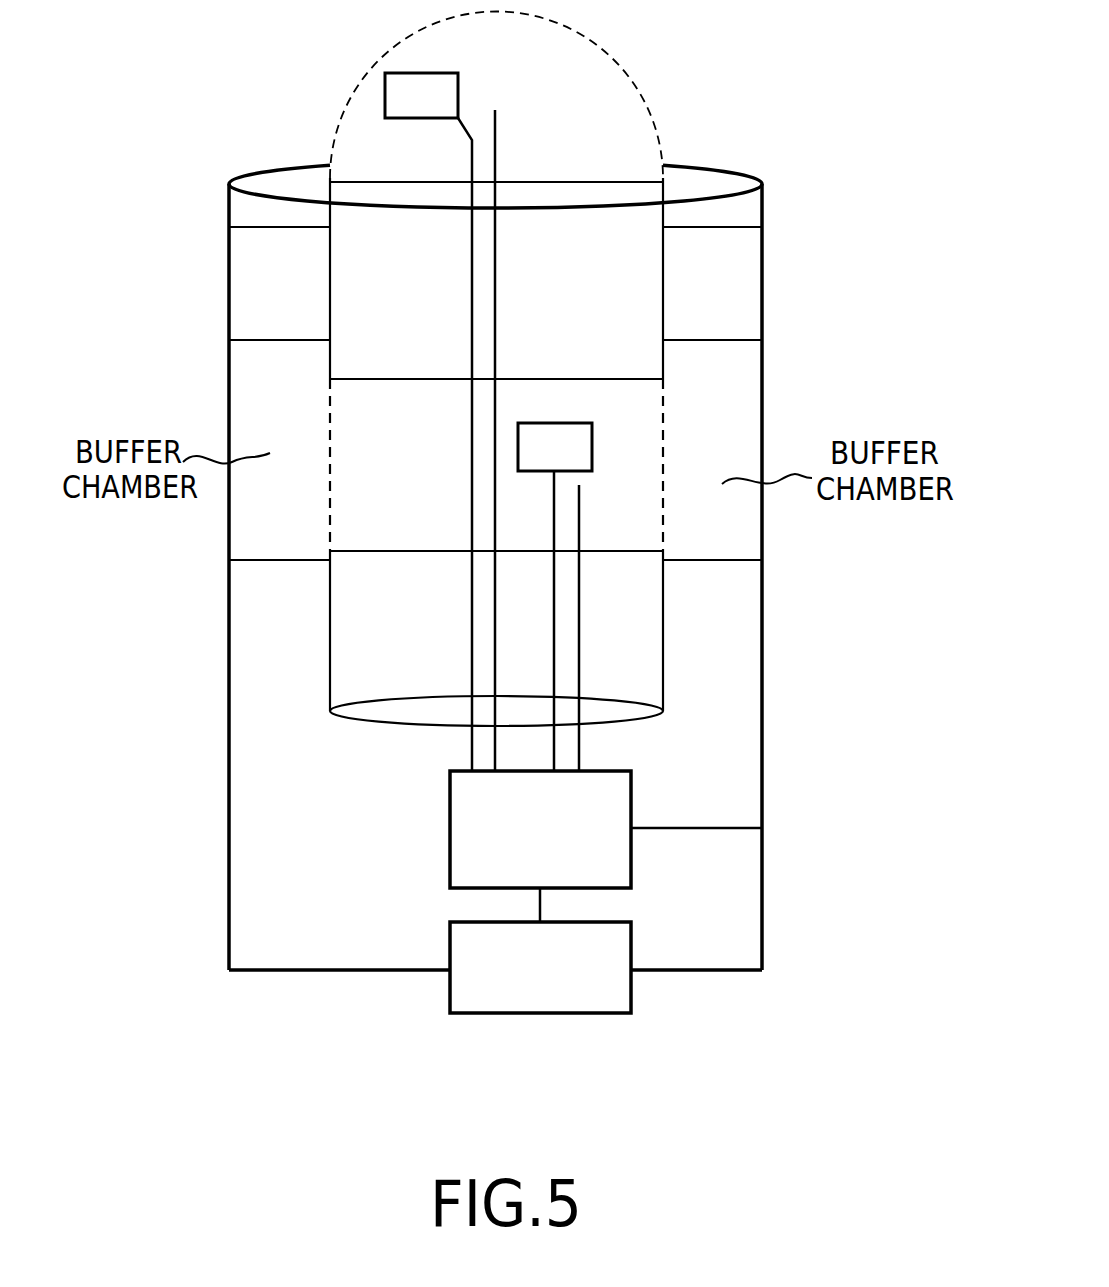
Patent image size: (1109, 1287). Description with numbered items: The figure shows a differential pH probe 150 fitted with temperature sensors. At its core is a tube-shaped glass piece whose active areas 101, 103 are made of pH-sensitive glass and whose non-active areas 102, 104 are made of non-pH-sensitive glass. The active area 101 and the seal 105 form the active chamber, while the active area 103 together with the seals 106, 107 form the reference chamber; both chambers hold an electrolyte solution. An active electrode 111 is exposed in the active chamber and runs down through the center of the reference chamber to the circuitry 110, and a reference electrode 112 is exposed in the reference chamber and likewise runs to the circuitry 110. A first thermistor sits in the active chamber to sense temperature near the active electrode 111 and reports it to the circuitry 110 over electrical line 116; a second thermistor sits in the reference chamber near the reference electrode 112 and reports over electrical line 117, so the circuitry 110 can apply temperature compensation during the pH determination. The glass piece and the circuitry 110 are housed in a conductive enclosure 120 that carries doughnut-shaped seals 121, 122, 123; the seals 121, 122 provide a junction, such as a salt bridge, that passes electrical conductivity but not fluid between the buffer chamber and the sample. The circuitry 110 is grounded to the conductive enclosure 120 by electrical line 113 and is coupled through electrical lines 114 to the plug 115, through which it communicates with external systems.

The active area 101 is at (597, 43).
The non-active area 102 is at (330, 290).
The active area 103 is at (330, 452).
The non-active area 104 is at (330, 618).
The seal 105 is at (552, 182).
The seal 106 is at (353, 379).
The seal 107 is at (370, 551).
The circuitry 110 is at (450, 869).
The active electrode 111 is at (495, 110).
The reference electrode 112 is at (579, 487).
The electrical line 113 is at (657, 827).
The electrical lines 114 is at (540, 916).
The plug 115 is at (631, 995).
The electrical line 116 is at (472, 403).
The electrical line 117 is at (554, 512).
The conductive enclosure 120 is at (762, 377).
The seal 121 is at (248, 228).
The seal 122 is at (248, 340).
The seal 123 is at (249, 560).
The differential pH probe 150 is at (820, 114).